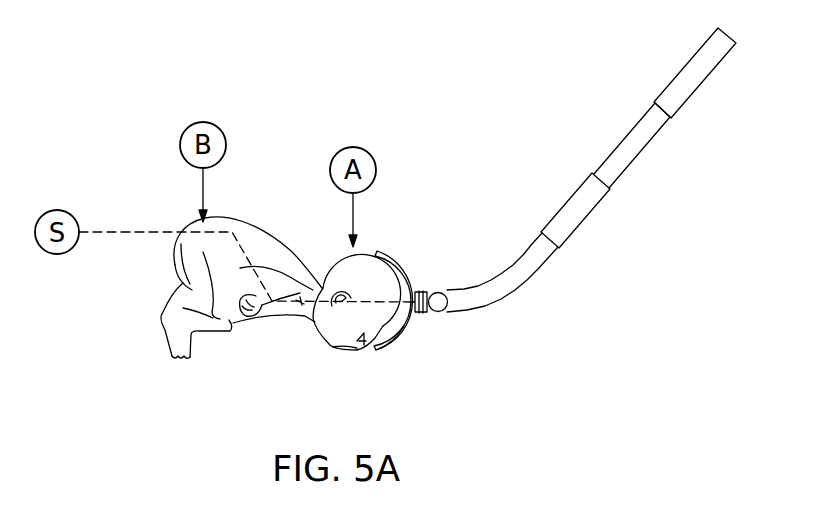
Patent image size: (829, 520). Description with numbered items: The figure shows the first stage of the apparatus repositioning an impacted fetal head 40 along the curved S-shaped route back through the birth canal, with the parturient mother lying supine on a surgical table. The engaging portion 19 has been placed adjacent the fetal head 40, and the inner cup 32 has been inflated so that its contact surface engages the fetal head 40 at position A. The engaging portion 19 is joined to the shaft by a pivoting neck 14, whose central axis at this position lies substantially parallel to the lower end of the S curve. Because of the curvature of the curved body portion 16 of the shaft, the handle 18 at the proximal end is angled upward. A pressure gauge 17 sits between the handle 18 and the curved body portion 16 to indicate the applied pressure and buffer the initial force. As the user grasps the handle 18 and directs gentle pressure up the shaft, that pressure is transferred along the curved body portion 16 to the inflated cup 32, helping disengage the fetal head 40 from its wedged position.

The pivoting neck 14 is at (437, 292).
The curved body portion 16 is at (505, 296).
The pressure gauge 17 is at (582, 223).
The handle portion 18 is at (678, 72).
The engaging portion 19 is at (377, 351).
The inner cup 32 is at (384, 255).
The fetal head 40 is at (340, 256).